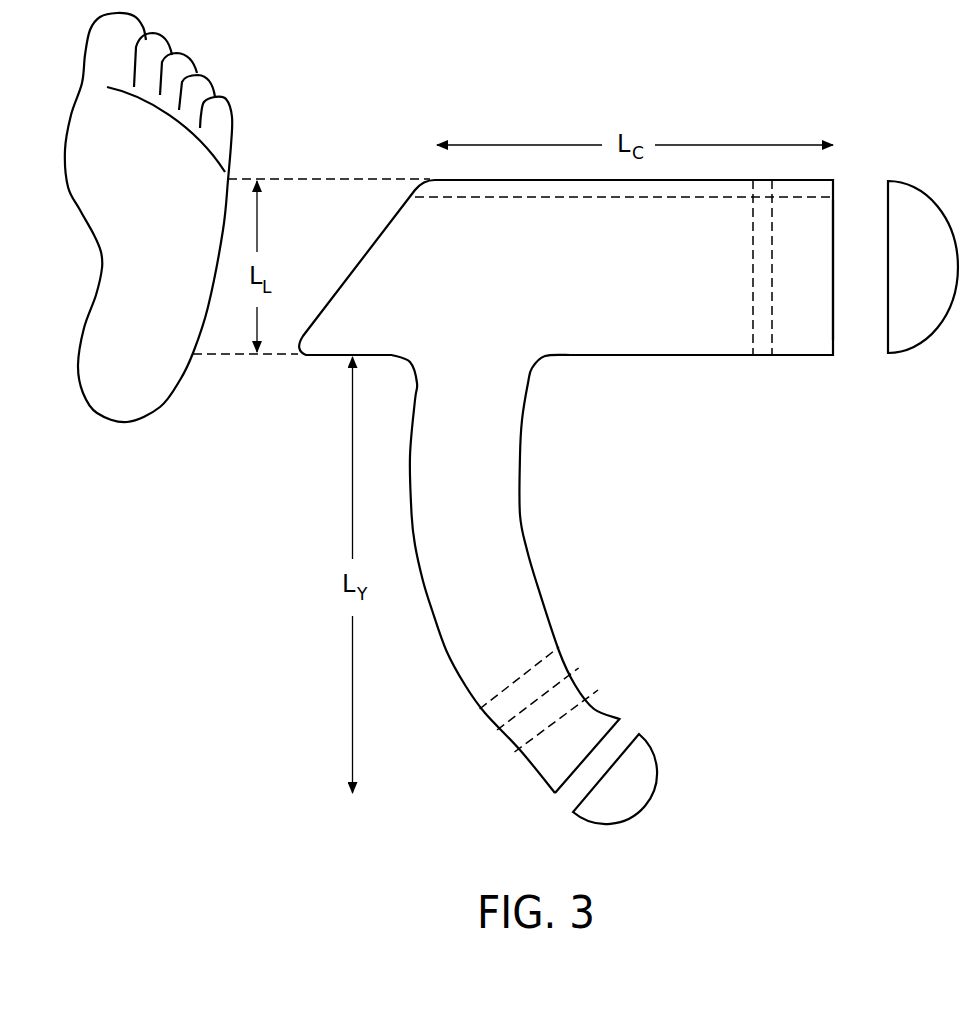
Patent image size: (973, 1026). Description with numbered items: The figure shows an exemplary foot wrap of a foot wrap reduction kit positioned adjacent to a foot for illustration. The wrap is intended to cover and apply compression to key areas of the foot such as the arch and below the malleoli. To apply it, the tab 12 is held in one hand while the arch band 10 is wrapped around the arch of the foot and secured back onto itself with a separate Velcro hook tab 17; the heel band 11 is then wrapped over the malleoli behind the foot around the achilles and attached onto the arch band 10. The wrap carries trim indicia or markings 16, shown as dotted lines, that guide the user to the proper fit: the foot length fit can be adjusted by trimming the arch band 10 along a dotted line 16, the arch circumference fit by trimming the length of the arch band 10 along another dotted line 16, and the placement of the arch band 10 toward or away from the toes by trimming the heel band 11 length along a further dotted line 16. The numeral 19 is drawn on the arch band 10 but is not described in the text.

The arch band 10 is at (653, 266).
The heel band 11 is at (474, 554).
The tab 12 is at (380, 335).
The trim indicia 16 is at (503, 198).
The Velcro hook tab 17 is at (897, 180).
The body surface 19 is at (638, 327).